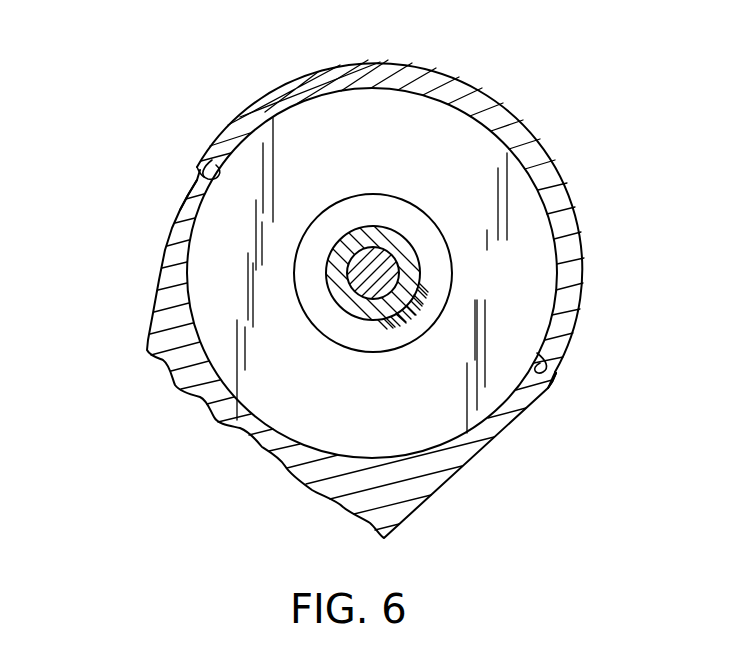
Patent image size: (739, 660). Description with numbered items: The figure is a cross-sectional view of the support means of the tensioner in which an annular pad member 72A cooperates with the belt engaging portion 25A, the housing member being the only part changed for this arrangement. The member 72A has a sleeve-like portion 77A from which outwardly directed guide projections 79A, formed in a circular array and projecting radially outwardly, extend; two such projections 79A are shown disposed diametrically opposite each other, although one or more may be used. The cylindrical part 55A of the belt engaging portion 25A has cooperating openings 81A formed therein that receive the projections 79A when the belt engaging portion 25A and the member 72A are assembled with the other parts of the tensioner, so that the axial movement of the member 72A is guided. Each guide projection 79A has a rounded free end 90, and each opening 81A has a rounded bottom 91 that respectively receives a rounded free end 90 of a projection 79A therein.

The belt engaging portion 25A is at (523, 120).
The cylindrical part 55A is at (340, 76).
The member 72A is at (425, 90).
The sleeve-like portion 77A is at (172, 261).
The guide projections 79A is at (212, 162).
The openings 81A is at (193, 203).
The rounded free ends 90 is at (200, 172).
The rounded bottoms 91 is at (210, 167).